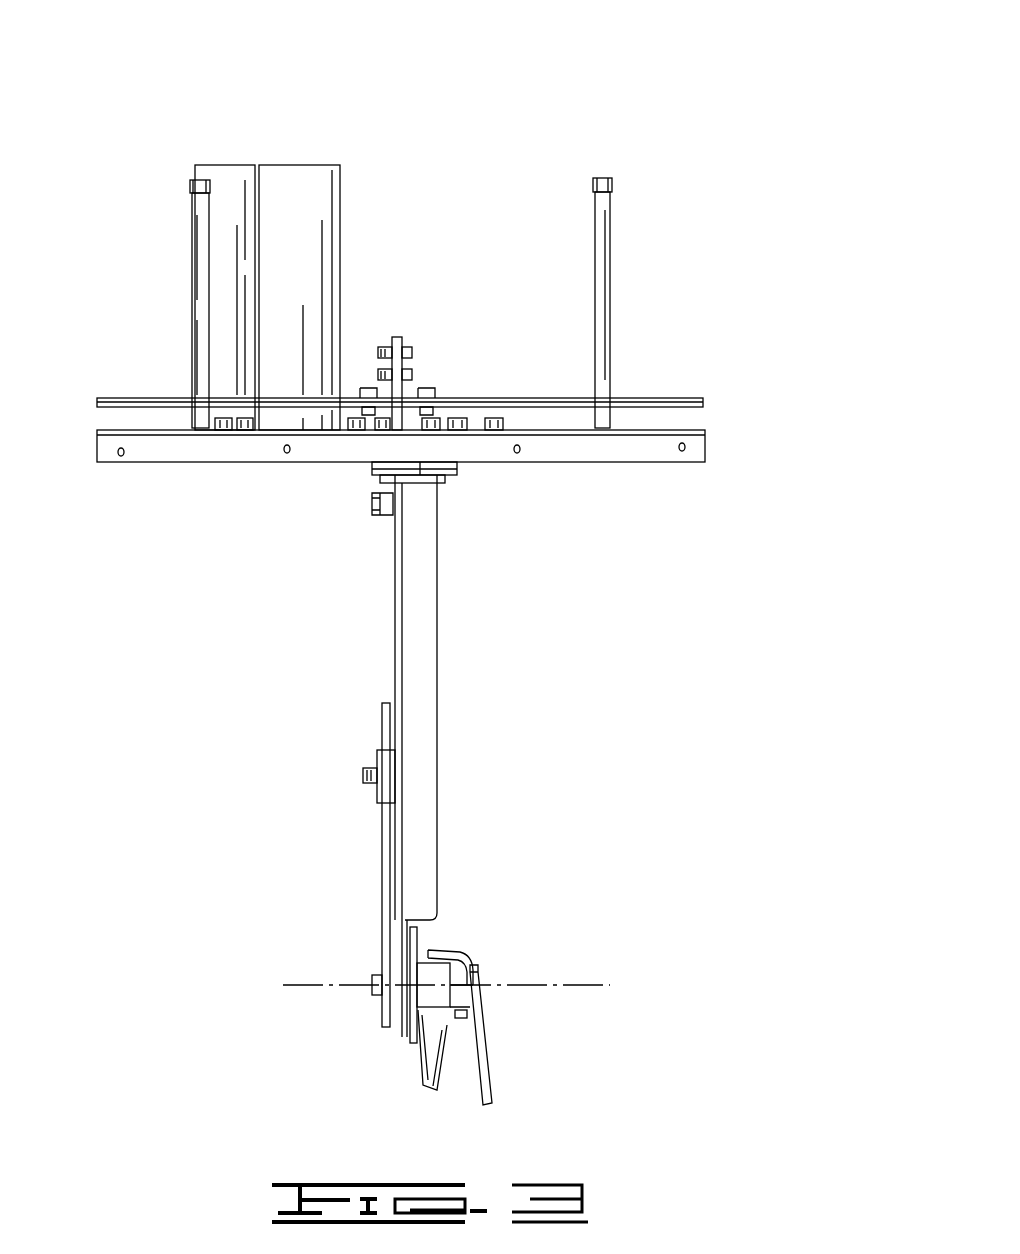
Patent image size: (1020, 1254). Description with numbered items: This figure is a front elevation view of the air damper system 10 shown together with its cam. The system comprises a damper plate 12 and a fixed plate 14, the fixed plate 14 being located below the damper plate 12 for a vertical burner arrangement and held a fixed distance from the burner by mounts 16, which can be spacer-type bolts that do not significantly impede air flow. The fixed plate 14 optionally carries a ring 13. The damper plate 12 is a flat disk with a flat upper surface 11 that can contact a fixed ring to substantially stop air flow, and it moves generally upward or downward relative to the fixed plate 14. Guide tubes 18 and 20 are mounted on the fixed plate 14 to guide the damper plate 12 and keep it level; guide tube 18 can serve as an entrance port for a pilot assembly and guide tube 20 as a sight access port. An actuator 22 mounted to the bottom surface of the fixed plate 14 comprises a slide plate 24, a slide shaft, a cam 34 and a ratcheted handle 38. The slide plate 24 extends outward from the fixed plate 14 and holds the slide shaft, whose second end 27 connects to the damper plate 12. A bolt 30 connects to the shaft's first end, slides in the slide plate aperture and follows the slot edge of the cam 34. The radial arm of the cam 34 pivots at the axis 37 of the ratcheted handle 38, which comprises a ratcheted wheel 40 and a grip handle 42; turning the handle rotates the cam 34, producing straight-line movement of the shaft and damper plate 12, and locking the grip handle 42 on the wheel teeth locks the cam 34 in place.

The air damper system 10 is at (570, 82).
The flat upper surface 11 is at (633, 398).
The damper plate 12 is at (703, 398).
The ring 13 is at (662, 453).
The fixed plate 14 is at (705, 430).
The mounts 16 is at (192, 265).
The guide tube 18 is at (218, 164).
The guide tube 20 is at (298, 164).
The actuator 22 is at (437, 765).
The slide plate 24 is at (437, 570).
The second end 27 is at (400, 337).
The bolt 30 is at (363, 775).
The cam 34 is at (383, 872).
The axis 37 is at (595, 985).
The ratcheted handle 38 is at (460, 955).
The ratcheted wheel 40 is at (417, 1040).
The grip handle 42 is at (490, 1070).